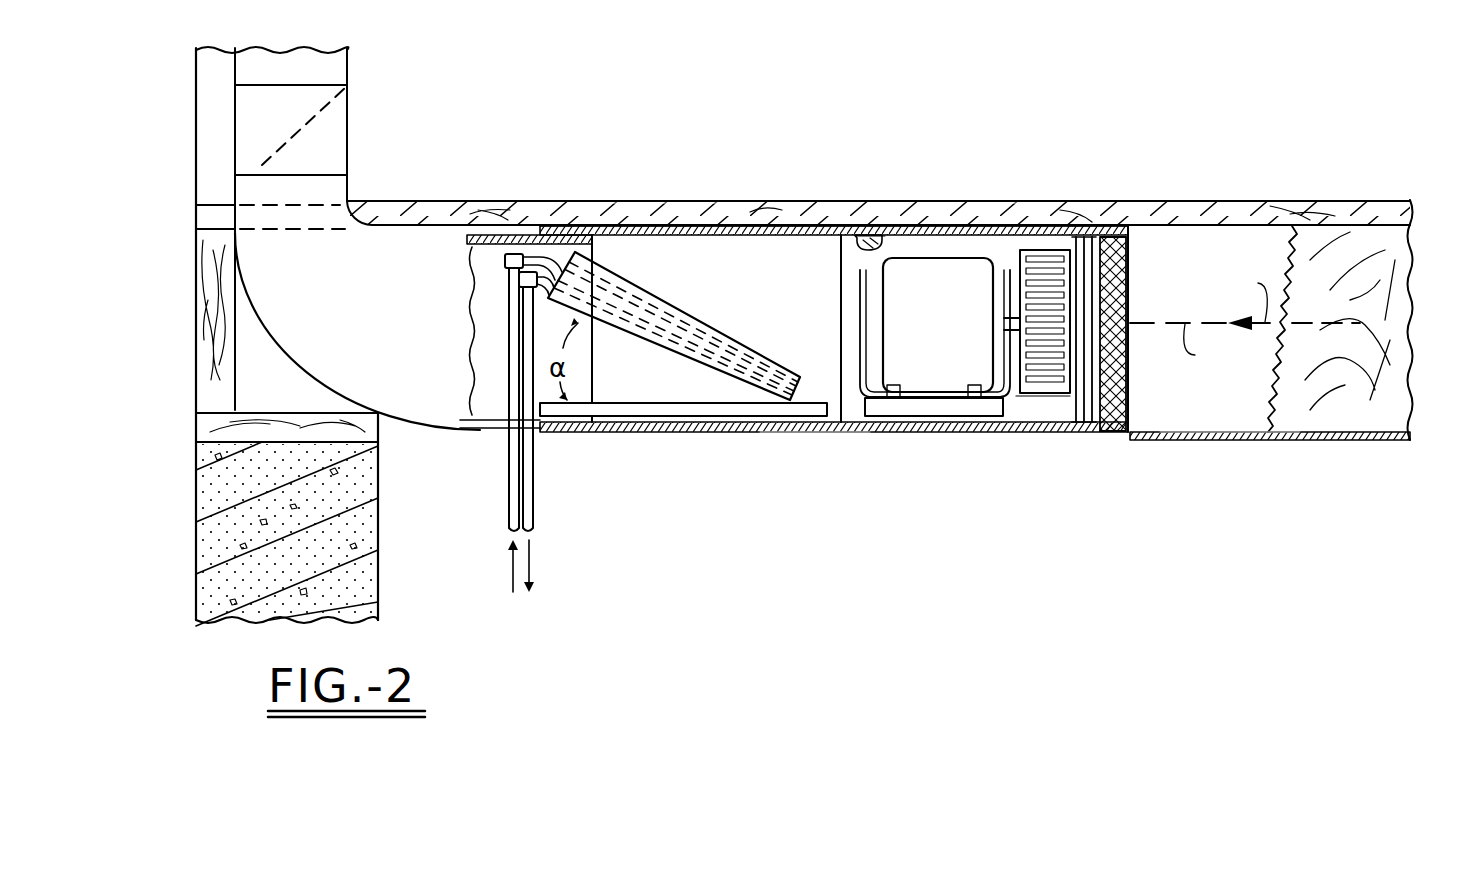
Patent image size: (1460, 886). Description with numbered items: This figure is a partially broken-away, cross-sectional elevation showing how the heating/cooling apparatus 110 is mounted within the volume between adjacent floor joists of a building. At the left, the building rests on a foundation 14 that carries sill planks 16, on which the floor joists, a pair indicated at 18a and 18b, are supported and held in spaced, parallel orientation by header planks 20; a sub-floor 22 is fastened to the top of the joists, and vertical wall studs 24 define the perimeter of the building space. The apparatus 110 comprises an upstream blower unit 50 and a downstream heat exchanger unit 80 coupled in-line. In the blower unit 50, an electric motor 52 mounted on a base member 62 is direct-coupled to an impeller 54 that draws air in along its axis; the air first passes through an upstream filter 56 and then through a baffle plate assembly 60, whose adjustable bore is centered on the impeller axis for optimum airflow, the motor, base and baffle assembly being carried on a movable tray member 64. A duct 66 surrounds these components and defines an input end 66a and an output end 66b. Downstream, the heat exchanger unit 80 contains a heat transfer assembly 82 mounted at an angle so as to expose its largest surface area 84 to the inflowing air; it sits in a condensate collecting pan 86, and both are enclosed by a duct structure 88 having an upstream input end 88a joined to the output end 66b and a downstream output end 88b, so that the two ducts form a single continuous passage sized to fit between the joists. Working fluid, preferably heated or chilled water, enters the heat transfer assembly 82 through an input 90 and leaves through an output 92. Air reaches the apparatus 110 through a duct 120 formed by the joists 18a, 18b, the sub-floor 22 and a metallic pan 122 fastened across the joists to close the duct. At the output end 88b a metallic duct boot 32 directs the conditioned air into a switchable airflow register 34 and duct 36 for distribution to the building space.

The foundation 14 is at (215, 540).
The sill planks 16 is at (200, 423).
The floor joist 18a is at (1380, 424).
The floor joist 18b is at (1232, 235).
The header planks 20 is at (200, 372).
The sub-floor 22 is at (1360, 208).
The wall studs 24 is at (200, 181).
The duct boot 32 is at (285, 300).
The airflow register 34 is at (262, 128).
The duct 36 is at (245, 68).
The blower unit 50 is at (1028, 214).
The electric motor 52 is at (944, 345).
The impeller 54 is at (1023, 396).
The filter 56 is at (1112, 434).
The baffle plate assembly 60 is at (1092, 428).
The base member 62 is at (918, 412).
The movable tray member 64 is at (1034, 424).
The duct 66 is at (955, 225).
The input end 66a is at (1124, 229).
The output end 66b is at (892, 230).
The heat exchanger unit 80 is at (697, 214).
The heat transfer assembly 82 is at (693, 352).
The surface area 84 is at (736, 337).
The condensate collecting pan 86 is at (690, 416).
The duct structure 88 is at (598, 231).
The input end 88a is at (858, 232).
The output end 88b is at (536, 234).
The input 90 is at (511, 497).
The output 92 is at (533, 499).
The heating/cooling apparatus 110 is at (812, 448).
The duct 120 is at (1248, 420).
The metallic pan 122 is at (1212, 441).